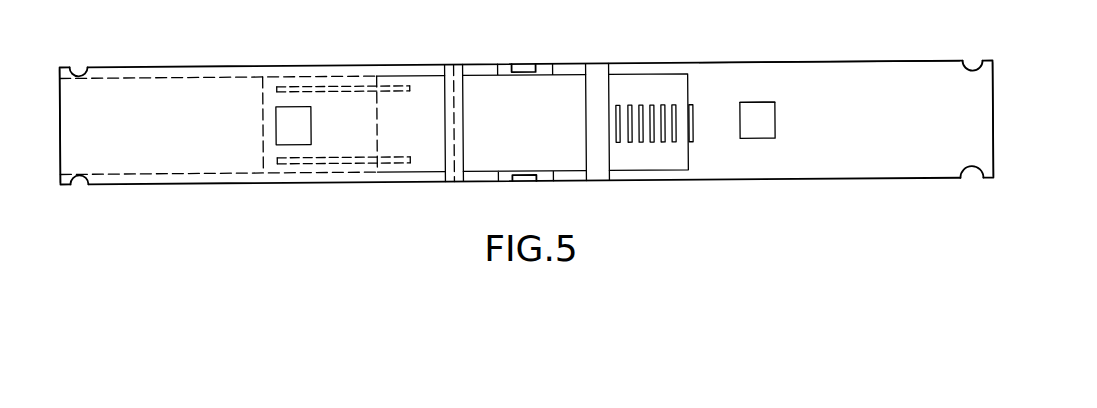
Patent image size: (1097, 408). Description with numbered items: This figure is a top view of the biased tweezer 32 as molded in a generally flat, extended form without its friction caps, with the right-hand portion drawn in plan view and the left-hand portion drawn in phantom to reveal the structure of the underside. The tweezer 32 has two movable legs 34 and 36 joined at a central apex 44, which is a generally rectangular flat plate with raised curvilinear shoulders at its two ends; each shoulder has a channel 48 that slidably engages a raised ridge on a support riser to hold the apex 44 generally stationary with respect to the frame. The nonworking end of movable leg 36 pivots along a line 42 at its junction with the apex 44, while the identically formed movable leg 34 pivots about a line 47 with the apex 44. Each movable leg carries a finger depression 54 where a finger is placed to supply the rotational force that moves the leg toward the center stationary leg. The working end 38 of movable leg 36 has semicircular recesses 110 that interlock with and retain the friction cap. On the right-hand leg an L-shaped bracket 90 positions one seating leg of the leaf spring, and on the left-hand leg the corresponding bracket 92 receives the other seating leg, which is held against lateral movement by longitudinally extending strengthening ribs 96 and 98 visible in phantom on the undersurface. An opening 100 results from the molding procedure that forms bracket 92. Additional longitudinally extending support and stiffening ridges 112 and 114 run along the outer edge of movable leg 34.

The biased tweezer 32 is at (508, 48).
The movable leg 34 is at (148, 84).
The movable leg 36 is at (862, 72).
The working end 38 is at (993, 113).
The pivot line 42 is at (595, 77).
The apex 44 is at (525, 123).
The pivot line 47 is at (454, 67).
The channel 48 is at (528, 63).
The finger depression 54 is at (638, 83).
The L-shaped bracket 90 is at (758, 110).
The L-shaped bracket 92 is at (284, 117).
The strengthening rib 96 is at (368, 163).
The strengthening rib 98 is at (343, 83).
The opening 100 is at (748, 100).
The semicircular recess 110 is at (966, 67).
The support and stiffening ridge 112 is at (203, 73).
The support and stiffening ridge 114 is at (213, 181).